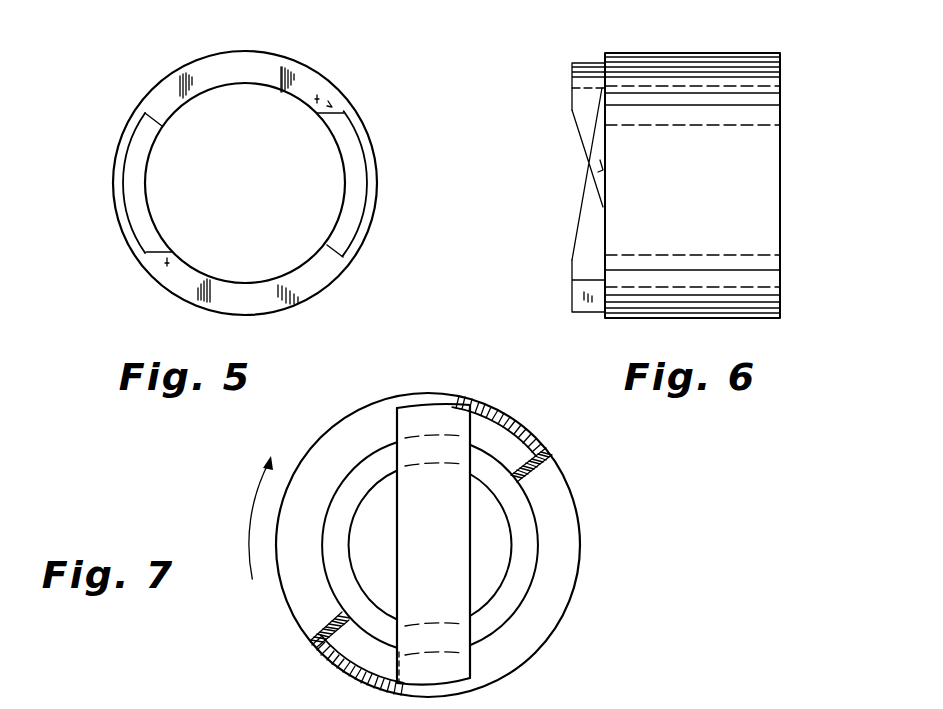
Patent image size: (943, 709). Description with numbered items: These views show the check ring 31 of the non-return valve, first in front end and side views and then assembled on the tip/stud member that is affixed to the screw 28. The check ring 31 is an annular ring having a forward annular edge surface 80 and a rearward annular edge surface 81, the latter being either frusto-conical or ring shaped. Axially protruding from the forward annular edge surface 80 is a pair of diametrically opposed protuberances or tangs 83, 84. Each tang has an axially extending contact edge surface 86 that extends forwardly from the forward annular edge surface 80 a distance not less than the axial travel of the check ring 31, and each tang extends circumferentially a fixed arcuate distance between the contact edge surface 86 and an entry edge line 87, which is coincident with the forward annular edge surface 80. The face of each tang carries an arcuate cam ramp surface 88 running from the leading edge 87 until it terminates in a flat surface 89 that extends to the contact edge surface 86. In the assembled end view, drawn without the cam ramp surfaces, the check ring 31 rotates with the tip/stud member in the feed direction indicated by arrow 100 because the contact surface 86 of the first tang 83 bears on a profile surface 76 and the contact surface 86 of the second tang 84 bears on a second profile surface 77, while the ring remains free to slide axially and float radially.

In FIG. 5, the screw 28 is at (278, 302).
In FIG. 5, the check ring 31 is at (153, 73).
In FIG. 6, the check ring 31 is at (705, 48).
In FIG. 7, the profile surface 76 is at (472, 664).
In FIG. 7, the second profile surface 77 is at (318, 643).
In FIG. 5, the forward annular edge surface 80 is at (245, 183).
In FIG. 6, the forward annular edge surface 80 is at (602, 90).
In FIG. 7, the forward annular edge surface 80 is at (543, 596).
In FIG. 6, the rearward annular edge surface 81 is at (783, 152).
In FIG. 5, the tang 83 is at (325, 75).
In FIG. 6, the tang 83 is at (572, 108).
In FIG. 7, the tang 83 is at (515, 414).
In FIG. 5, the tang 84 is at (178, 295).
In FIG. 6, the tang 84 is at (575, 270).
In FIG. 7, the tang 84 is at (342, 674).
In FIG. 5, the contact edge surface 86 is at (283, 72).
In FIG. 6, the contact edge surface 86 is at (580, 300).
In FIG. 5, the entry edge line 87 is at (338, 250).
In FIG. 6, the entry edge line 87 is at (598, 163).
In FIG. 7, the entry edge line 87 is at (544, 452).
In FIG. 5, the cam ramp surface 88 is at (142, 220).
In FIG. 6, the cam ramp surface 88 is at (582, 135).
In FIG. 5, the flat surface 89 is at (331, 107).
In FIG. 6, the flat surface 89 is at (571, 85).
In FIG. 7, the flat surface 89 is at (508, 444).
In FIG. 7, the arrow 100 is at (252, 497).